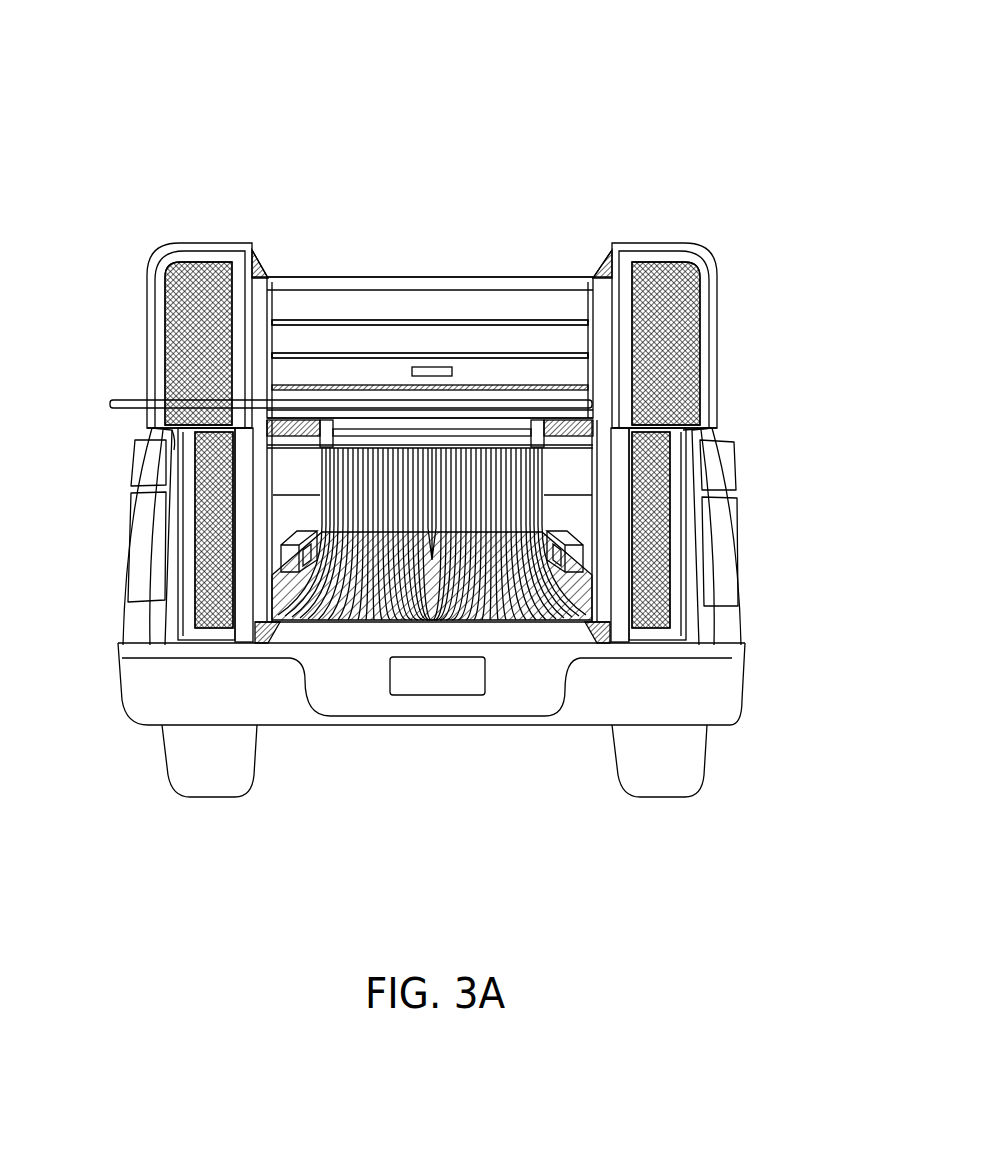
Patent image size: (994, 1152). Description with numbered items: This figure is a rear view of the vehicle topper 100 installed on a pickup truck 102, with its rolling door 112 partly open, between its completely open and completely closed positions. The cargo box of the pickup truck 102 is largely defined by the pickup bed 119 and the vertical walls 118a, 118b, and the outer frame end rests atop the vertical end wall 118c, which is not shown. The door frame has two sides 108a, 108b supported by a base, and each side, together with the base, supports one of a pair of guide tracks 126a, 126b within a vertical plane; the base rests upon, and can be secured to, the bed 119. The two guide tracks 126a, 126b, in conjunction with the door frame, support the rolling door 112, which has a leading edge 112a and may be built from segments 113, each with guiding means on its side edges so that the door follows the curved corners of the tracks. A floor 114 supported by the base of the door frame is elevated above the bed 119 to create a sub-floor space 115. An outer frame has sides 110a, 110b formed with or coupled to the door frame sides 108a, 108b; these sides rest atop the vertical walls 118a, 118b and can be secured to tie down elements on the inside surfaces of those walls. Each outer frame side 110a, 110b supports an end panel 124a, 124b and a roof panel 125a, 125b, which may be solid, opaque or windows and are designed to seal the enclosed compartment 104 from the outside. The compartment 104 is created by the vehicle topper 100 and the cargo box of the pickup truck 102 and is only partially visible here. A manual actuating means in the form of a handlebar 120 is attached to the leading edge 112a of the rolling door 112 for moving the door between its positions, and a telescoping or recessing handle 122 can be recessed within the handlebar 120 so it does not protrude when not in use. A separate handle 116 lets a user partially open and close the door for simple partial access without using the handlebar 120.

The vehicle topper 100 is at (443, 165).
The pickup truck 102 is at (757, 522).
The compartment 104 is at (735, 645).
The side of door frame 108a is at (272, 280).
The side of door frame 108b is at (593, 276).
The outer frame side 110a is at (172, 250).
The outer frame side 110b is at (714, 356).
The rolling door 112 is at (560, 277).
The leading edge 112a is at (328, 420).
The segments 113 is at (512, 340).
The floor 114 is at (380, 640).
The sub-floor space 115 is at (490, 634).
The handle 116 is at (432, 372).
The vertical wall 118a is at (130, 457).
The vertical wall 118b is at (752, 633).
The vertical end wall 118c is at (432, 523).
The pickup bed 119 is at (418, 636).
The handlebar 120 is at (327, 403).
The handle 122 is at (140, 400).
The end panel 124a is at (165, 325).
The end panel 124b is at (700, 308).
The roof panel 125a is at (205, 262).
The roof panel 125b is at (633, 262).
The guide track 126a is at (275, 642).
The guide track 126b is at (590, 628).